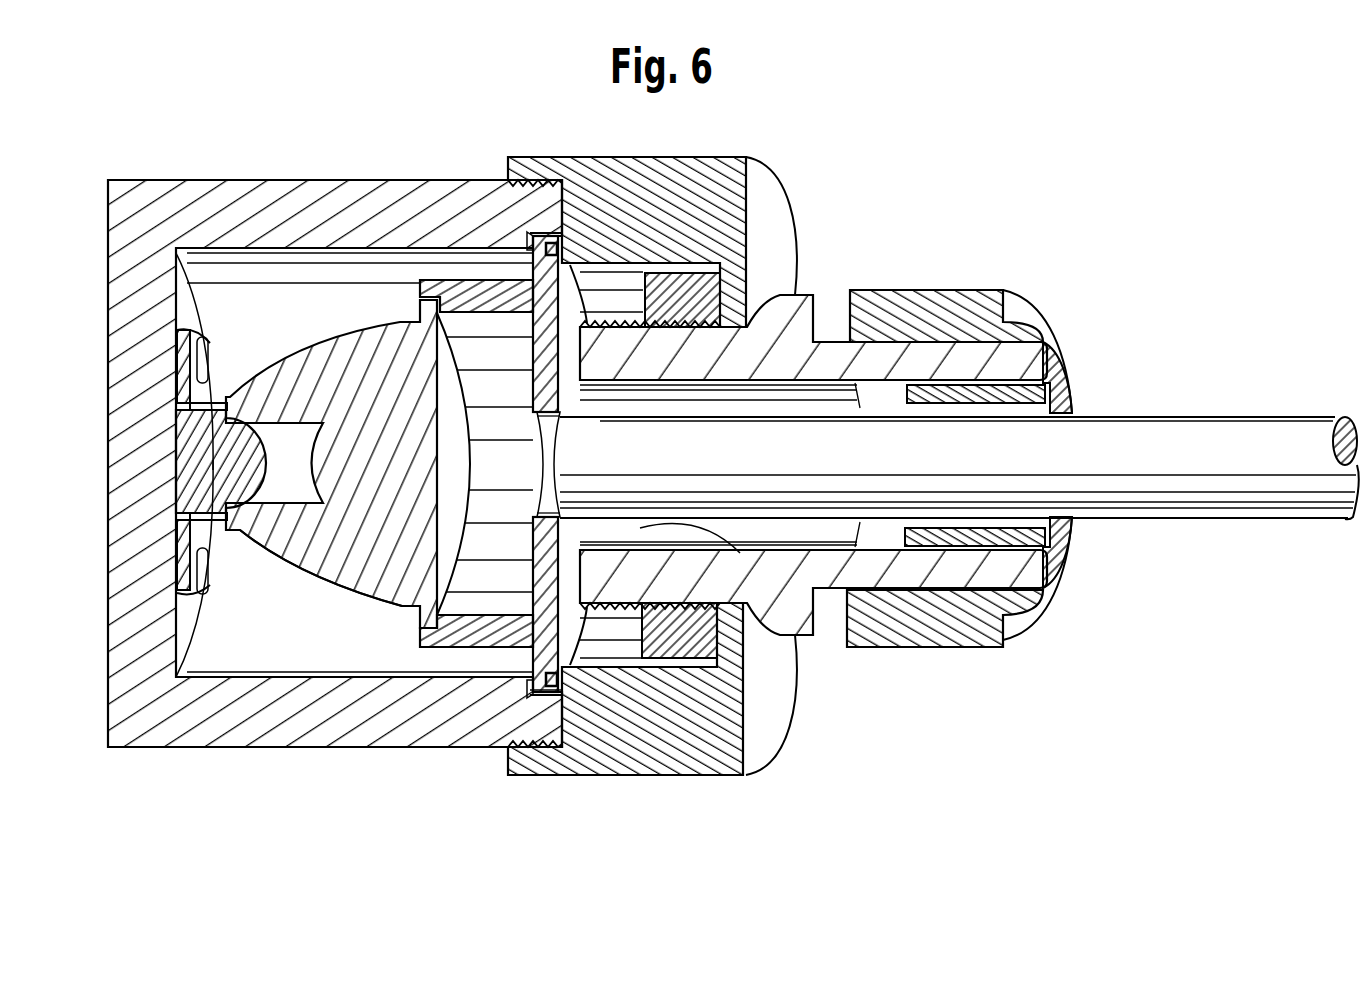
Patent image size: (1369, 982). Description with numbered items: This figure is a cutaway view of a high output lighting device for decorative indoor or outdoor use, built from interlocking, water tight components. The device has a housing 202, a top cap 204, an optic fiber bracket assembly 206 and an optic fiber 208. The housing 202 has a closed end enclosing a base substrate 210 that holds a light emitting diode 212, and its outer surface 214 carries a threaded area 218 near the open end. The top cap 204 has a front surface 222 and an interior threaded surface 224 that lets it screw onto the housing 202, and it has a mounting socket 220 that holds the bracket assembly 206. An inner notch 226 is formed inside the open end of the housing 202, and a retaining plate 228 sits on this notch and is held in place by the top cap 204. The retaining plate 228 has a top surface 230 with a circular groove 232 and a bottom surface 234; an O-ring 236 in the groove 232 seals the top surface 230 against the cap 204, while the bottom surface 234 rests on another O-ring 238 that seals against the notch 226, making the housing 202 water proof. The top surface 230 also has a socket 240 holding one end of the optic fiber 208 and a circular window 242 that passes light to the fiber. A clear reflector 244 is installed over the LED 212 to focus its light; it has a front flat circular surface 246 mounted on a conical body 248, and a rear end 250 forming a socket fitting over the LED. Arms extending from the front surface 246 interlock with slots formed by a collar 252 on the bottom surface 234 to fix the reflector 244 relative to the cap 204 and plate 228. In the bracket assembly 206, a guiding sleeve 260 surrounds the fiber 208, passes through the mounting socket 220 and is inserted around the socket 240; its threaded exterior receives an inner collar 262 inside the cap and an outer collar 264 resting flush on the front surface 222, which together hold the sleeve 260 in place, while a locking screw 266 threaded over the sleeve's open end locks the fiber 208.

The housing 202 is at (240, 182).
The top cap 204 is at (706, 158).
The optic fiber bracket assembly 206 is at (953, 650).
The optic fiber 208 is at (1113, 428).
The base substrate 210 is at (182, 595).
The light emitting diode (LED) 212 is at (268, 505).
The outer surface 214 is at (315, 182).
The threaded area 218 is at (575, 235).
The mounting socket 220 is at (793, 627).
The front surface 222 is at (803, 240).
The interior threaded surface 224 is at (574, 235).
The inner notch 226 is at (548, 245).
The retaining plate 228 is at (512, 632).
The top surface 230 is at (622, 658).
The circular groove 232 is at (588, 643).
The bottom surface 234 is at (550, 688).
The O-ring 236 is at (660, 660).
The O-ring 238 is at (540, 675).
The socket 240 is at (795, 632).
The circular window 242 is at (400, 608).
The reflector 244 is at (312, 365).
The front flat circular surface 246 is at (450, 347).
The conical body 248 is at (177, 323).
The rear end 250 is at (178, 411).
The collar 252 is at (475, 652).
The guiding sleeve 260 is at (822, 347).
The inner collar 262 is at (723, 623).
The outer collar 264 is at (800, 636).
The locking screw 266 is at (1012, 615).